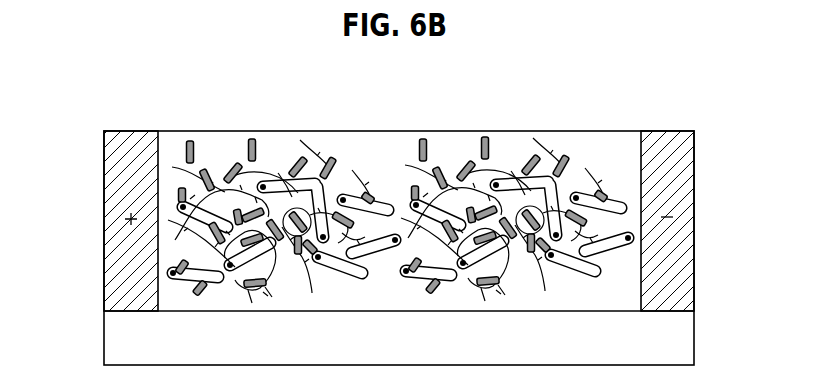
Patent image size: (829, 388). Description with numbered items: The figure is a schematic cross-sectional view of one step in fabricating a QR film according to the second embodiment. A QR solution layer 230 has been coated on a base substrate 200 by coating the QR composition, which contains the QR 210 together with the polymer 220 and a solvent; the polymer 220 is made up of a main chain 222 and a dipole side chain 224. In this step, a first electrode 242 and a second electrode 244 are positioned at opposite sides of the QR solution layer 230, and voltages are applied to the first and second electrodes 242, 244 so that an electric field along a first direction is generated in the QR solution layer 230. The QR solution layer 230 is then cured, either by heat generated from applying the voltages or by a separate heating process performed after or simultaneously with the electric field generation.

The base substrate 200 is at (680, 349).
The QR 210 is at (285, 172).
The polymer 220 is at (372, 179).
The main chain 222 is at (172, 167).
The dipole side chain 224 is at (190, 140).
The QR solution layer 230 is at (384, 179).
The first electrode 242 is at (120, 188).
The second electrode 244 is at (680, 185).